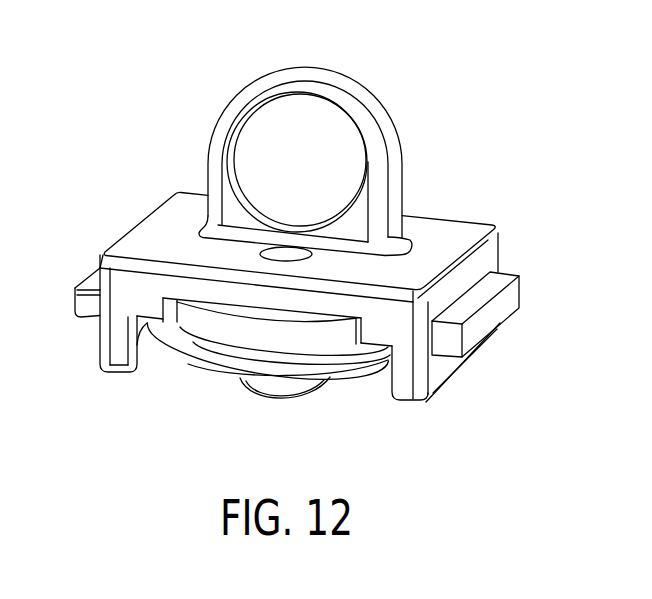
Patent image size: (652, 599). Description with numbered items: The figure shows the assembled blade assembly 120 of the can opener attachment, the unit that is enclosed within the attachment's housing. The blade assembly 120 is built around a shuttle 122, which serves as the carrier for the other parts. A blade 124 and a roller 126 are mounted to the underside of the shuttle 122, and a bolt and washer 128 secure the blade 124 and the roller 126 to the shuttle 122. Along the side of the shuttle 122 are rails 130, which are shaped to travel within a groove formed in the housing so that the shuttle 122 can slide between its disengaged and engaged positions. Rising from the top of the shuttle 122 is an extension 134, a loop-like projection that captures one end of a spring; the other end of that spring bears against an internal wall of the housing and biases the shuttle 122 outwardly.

The blade assembly 120 is at (443, 113).
The shuttle 122 is at (157, 209).
The blade 124 is at (357, 375).
The roller 126 is at (202, 332).
The bolt and washer 128 is at (275, 395).
The rails 130 is at (517, 298).
The extension 134 is at (285, 118).